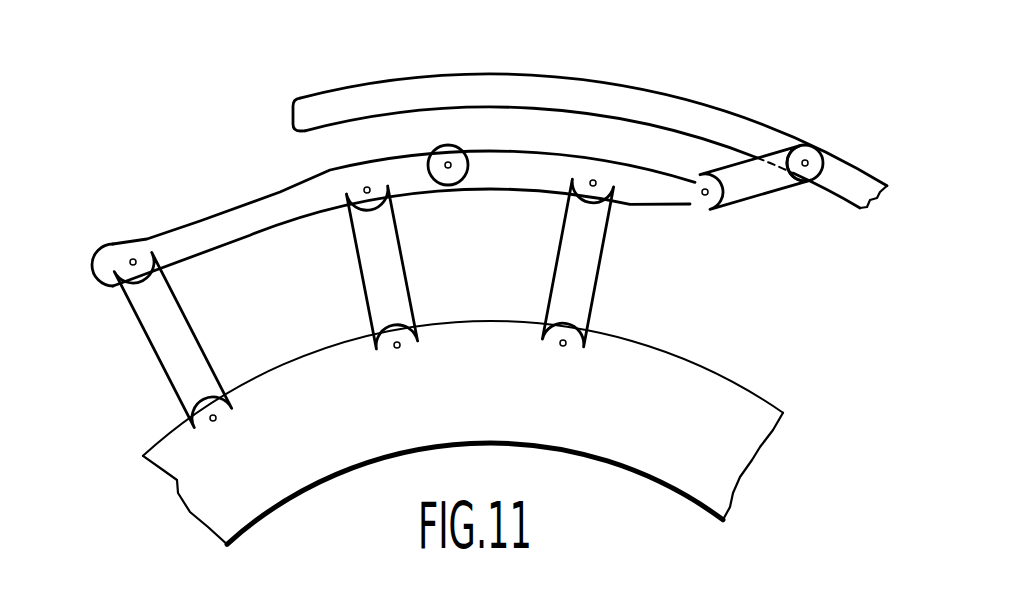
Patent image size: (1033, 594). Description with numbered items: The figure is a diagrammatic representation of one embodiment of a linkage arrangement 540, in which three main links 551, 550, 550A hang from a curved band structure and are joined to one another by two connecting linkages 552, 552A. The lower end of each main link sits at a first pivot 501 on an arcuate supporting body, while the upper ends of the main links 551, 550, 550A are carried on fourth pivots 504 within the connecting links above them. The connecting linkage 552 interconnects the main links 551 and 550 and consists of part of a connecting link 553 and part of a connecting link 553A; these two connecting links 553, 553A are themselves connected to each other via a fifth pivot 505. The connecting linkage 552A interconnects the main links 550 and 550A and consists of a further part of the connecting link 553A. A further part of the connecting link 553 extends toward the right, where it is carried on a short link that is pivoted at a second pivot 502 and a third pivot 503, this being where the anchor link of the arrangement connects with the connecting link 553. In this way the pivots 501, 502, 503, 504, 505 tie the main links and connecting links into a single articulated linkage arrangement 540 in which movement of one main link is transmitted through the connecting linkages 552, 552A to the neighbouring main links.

The first pivot 501 is at (216, 417).
The second pivot 502 is at (806, 163).
The third pivot 503 is at (706, 194).
The fourth pivot 504 is at (592, 184).
The fifth pivot 505 is at (450, 160).
The linkage arrangement 540 is at (714, 287).
The main link 550 is at (395, 286).
The main link 550A is at (175, 313).
The main link 551 is at (578, 279).
The connecting linkage 552 is at (418, 101).
The connecting linkage 552A is at (180, 162).
The connecting link 553 is at (543, 158).
The connecting link 553A is at (287, 213).